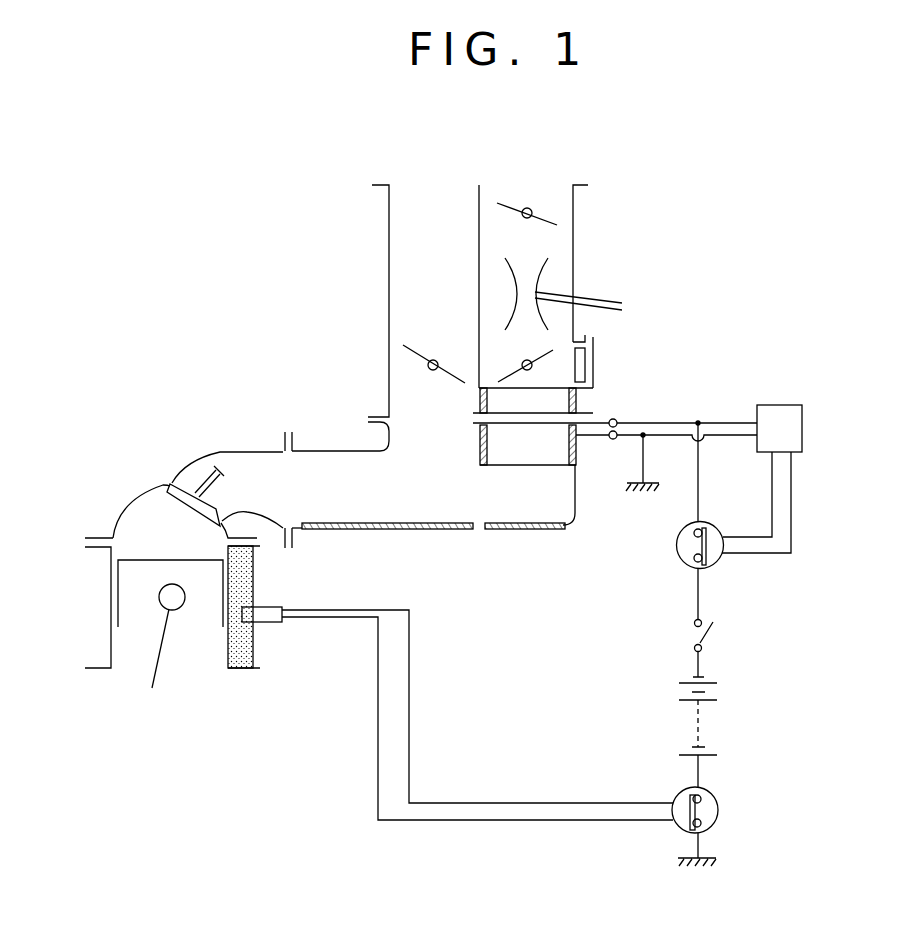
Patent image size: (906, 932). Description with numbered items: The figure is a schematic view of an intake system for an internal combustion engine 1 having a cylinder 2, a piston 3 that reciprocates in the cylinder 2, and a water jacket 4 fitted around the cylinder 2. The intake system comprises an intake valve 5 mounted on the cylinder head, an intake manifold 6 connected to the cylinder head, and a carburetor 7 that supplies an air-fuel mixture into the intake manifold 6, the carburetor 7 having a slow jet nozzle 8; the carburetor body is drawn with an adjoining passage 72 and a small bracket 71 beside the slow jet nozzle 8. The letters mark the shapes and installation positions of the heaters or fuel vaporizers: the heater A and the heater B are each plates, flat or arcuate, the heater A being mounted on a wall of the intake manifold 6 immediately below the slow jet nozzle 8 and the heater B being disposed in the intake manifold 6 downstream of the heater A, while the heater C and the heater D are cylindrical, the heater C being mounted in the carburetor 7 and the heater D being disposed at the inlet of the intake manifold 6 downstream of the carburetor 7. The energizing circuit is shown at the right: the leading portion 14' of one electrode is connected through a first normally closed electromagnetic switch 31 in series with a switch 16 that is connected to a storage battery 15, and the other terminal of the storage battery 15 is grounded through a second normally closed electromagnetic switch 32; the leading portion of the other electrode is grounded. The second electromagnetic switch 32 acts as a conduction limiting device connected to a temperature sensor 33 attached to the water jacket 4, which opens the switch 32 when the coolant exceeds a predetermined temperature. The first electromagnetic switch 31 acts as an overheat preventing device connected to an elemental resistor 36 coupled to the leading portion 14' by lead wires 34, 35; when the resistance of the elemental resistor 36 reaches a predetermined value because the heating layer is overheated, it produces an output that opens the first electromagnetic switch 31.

The internal combustion engine 1 is at (140, 491).
The cylinder 2 is at (105, 618).
The piston 3 is at (220, 602).
The water jacket 4 is at (237, 597).
The intake valve 5 is at (195, 486).
The intake manifold 6 is at (578, 522).
The carburetor 7 is at (576, 236).
The slow jet nozzle 8 is at (575, 381).
The bracket 71 is at (534, 345).
The bypass duct 72 is at (412, 321).
The heater A is at (538, 532).
The heater B is at (423, 532).
The heater C is at (577, 401).
The heater D is at (479, 451).
The leading portion of electrode 14' is at (570, 404).
The storage battery 15 is at (713, 691).
The switch 16 is at (712, 639).
The first normally closed electromagnetic switch 31 is at (678, 559).
The second normally closed electromagnetic switch 32 is at (717, 800).
The temperature sensor 33 is at (268, 623).
The lead wire 34 is at (733, 421).
The lead wire 35 is at (727, 438).
The elemental resistor 36 is at (777, 421).